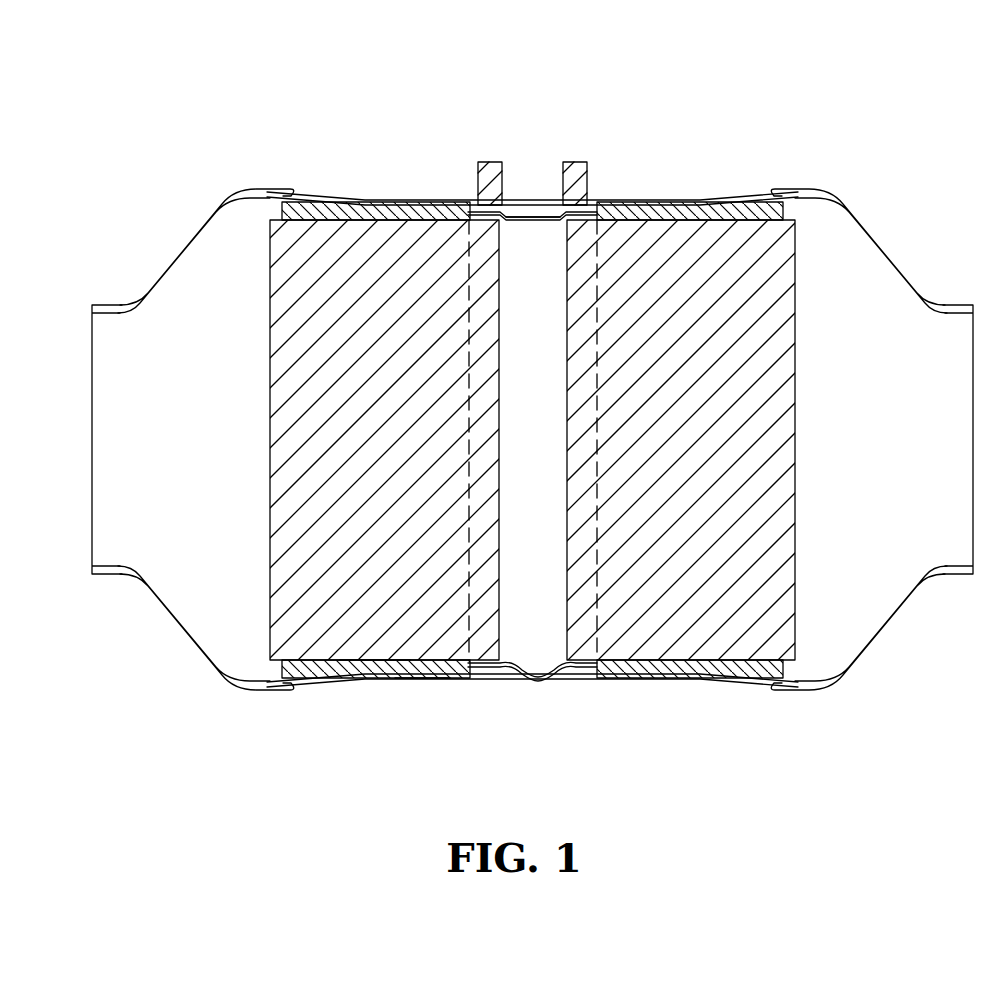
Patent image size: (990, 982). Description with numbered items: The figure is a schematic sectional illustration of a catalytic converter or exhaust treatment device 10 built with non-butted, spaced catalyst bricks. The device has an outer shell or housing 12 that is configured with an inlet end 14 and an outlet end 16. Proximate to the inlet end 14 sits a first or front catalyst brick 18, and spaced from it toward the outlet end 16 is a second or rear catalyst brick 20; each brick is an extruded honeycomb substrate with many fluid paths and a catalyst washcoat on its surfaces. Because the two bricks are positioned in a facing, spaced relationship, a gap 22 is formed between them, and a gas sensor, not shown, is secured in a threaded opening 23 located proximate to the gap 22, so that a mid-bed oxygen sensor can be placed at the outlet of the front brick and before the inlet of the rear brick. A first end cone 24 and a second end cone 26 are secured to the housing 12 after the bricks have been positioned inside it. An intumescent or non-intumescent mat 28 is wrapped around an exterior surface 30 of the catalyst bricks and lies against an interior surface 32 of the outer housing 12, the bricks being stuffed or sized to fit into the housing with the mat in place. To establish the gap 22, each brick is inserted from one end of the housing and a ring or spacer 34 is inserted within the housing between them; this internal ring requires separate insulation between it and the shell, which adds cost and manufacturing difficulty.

The catalytic converter or exhaust treatment device 10 is at (687, 113).
The outer shell or housing 12 is at (706, 197).
The inlet end 14 is at (283, 680).
The outlet end 16 is at (785, 680).
The first catalyst brick 18 is at (262, 305).
The second catalyst brick 20 is at (805, 300).
The gap 22 is at (536, 620).
The threaded opening 23 is at (562, 214).
The first end cone 24 is at (182, 638).
The second end cone 26 is at (875, 633).
The intumescent or non-intumescent mat 28 is at (366, 213).
The exterior surface 30 is at (375, 660).
The interior surface 32 is at (422, 668).
The ring or spacer 34 is at (517, 213).